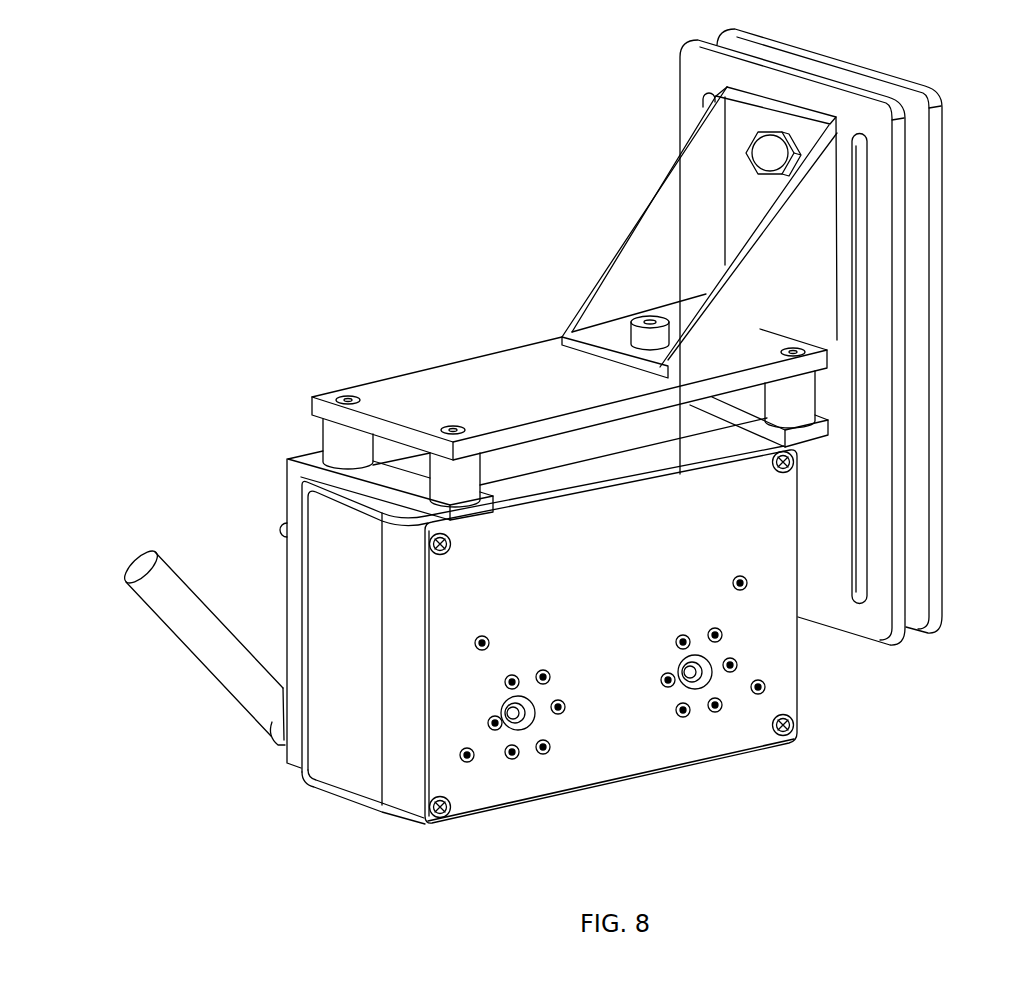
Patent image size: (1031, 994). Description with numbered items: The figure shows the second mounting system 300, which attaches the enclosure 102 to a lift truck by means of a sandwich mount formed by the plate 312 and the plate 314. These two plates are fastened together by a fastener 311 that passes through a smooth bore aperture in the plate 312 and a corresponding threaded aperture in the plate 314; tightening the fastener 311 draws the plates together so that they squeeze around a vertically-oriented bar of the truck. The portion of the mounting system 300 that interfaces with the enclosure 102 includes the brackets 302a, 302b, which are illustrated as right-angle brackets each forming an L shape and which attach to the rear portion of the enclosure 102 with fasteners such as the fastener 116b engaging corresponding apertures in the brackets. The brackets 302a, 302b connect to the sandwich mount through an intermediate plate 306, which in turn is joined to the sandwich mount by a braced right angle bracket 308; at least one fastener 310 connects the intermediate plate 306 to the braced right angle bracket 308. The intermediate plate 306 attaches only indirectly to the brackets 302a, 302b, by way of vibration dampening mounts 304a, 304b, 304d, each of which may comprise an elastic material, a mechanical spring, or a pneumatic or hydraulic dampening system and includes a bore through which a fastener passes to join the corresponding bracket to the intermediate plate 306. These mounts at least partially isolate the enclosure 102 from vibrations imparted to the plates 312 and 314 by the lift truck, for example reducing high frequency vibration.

The mounting system 300 is at (486, 46).
The enclosure 102 is at (627, 768).
The fastener 116b is at (278, 530).
The bracket 302a is at (283, 473).
The bracket 302b is at (830, 437).
The vibration dampening mount 304a is at (318, 438).
The vibration dampening mount 304b is at (425, 470).
The vibration dampening mount 304d is at (817, 390).
The intermediate plate 306 is at (499, 348).
The braced right angle bracket 308 is at (647, 226).
The fastener 310 is at (636, 316).
The fastener 311 is at (745, 160).
The plate 312 is at (902, 225).
The plate 314 is at (937, 120).